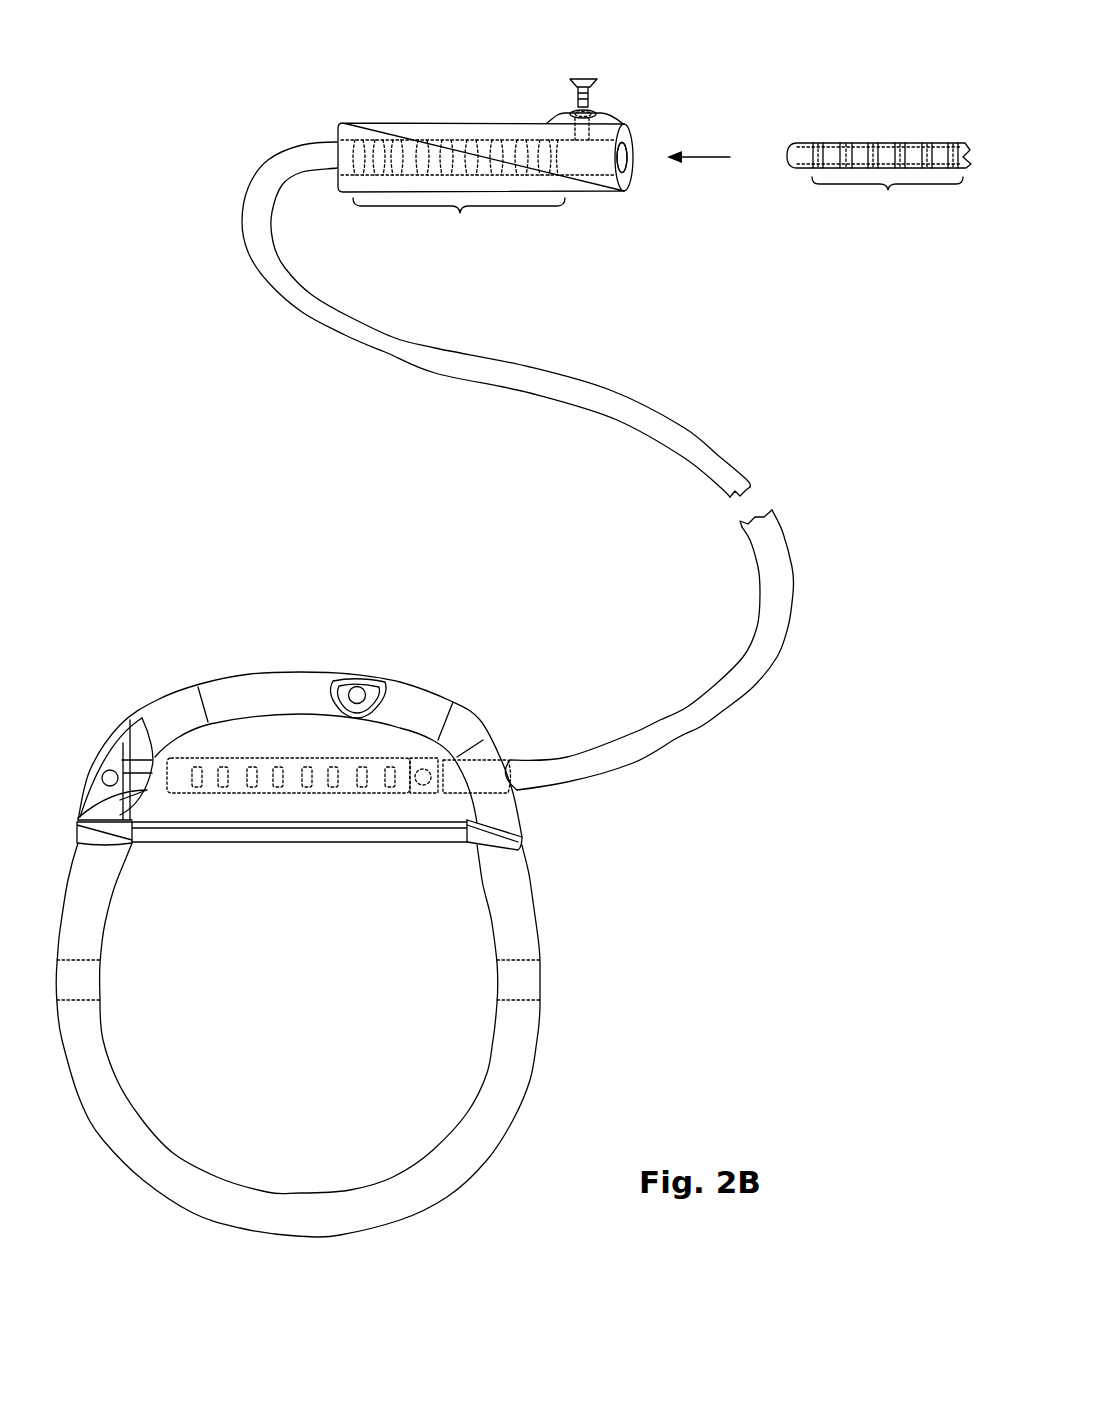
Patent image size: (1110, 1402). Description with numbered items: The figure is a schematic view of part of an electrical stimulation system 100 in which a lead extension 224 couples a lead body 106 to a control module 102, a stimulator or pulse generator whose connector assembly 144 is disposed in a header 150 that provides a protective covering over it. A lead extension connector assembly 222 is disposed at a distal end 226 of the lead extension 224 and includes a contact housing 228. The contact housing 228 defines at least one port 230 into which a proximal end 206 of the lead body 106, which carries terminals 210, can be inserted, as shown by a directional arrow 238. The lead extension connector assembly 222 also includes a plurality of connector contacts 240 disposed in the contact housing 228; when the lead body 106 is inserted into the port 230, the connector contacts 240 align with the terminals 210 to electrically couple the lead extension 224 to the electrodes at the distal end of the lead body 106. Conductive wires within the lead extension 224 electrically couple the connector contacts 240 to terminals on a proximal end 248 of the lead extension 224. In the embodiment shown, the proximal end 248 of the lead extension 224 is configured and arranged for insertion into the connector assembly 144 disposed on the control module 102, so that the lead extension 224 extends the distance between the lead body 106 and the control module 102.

The electrical stimulation system 100 is at (745, 372).
The control module 102 is at (604, 991).
The lead body 106 is at (883, 143).
The connector assembly 144 is at (243, 755).
The header 150 is at (398, 700).
The proximal end of the lead body 206 is at (848, 112).
The terminals 210 is at (887, 196).
The lead extension connector assembly 222 is at (440, 128).
The lead extension 224 is at (610, 390).
The distal end of the lead extension 226 is at (329, 113).
The contact housing 228 is at (388, 135).
The port 230 is at (650, 184).
The directional arrow 238 is at (707, 157).
The connector contacts 240 is at (459, 223).
The proximal end of the lead extension 248 is at (524, 727).